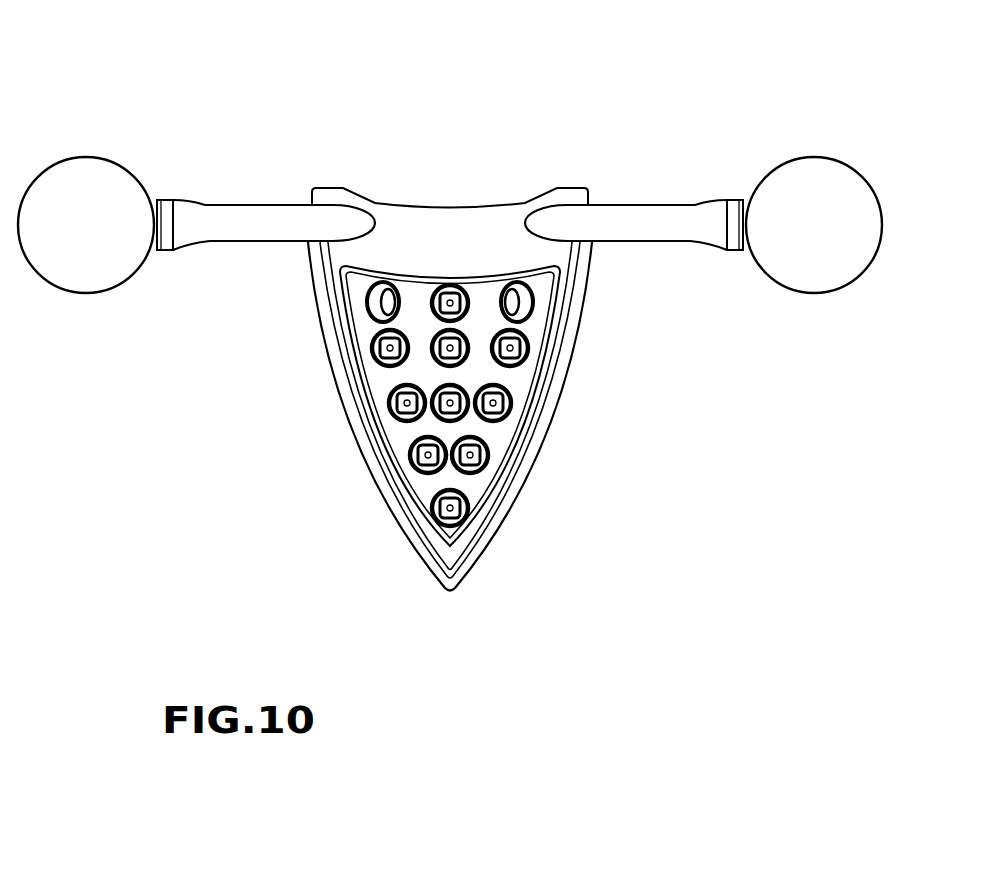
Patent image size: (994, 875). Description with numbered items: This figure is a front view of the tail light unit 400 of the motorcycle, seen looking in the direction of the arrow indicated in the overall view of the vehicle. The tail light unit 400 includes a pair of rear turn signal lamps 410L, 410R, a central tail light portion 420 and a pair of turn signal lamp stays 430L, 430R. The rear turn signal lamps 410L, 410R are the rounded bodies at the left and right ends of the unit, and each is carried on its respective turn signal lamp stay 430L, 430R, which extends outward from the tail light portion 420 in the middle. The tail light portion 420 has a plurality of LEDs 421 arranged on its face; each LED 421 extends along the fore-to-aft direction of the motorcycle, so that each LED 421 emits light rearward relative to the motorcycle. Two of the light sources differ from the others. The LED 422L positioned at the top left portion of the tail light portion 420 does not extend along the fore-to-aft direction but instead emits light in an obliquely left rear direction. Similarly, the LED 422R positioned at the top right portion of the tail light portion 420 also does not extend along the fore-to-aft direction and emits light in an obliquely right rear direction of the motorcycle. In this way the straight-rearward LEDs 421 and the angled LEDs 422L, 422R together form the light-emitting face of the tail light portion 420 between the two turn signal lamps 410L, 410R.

The tail light unit 400 is at (654, 160).
The rear turn signal lamp 410L is at (92, 183).
The rear turn signal lamp 410R is at (832, 183).
The turn signal lamp stay 430L is at (236, 212).
The turn signal lamp stay 430R is at (617, 203).
The tail light portion 420 is at (516, 378).
The LED 421 is at (490, 453).
The LED 422L is at (368, 304).
The LED 422R is at (532, 300).